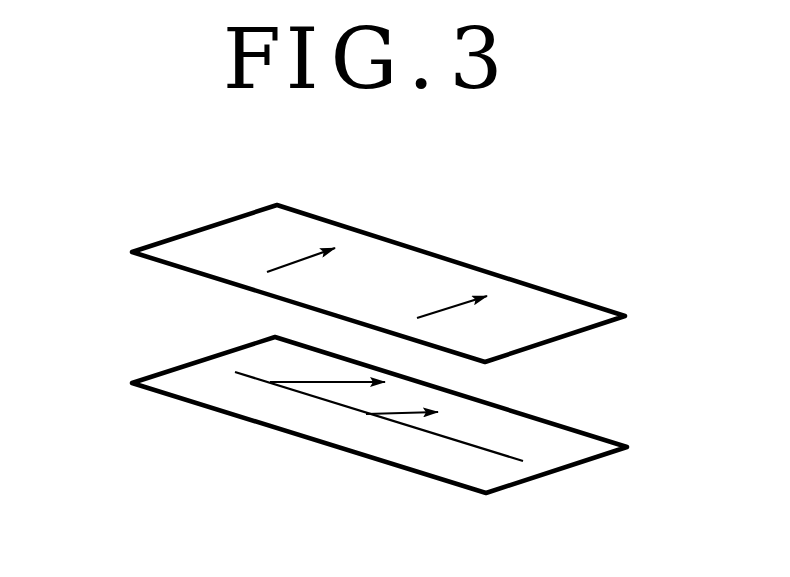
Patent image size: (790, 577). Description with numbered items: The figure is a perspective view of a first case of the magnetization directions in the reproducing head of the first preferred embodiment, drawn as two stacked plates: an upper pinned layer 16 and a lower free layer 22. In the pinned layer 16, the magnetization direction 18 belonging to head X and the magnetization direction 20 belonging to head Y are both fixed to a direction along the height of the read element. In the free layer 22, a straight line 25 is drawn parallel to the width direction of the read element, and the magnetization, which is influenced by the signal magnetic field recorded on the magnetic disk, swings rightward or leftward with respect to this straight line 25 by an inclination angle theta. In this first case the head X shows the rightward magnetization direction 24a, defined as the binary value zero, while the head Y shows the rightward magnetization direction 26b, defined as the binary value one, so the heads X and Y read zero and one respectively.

The pinned layer 16 is at (173, 245).
The magnetization direction 18 is at (293, 263).
The magnetization direction 20 is at (440, 312).
The free layer 22 is at (173, 385).
The rightward magnetization direction 24a is at (303, 380).
The straight line 25 is at (330, 402).
The rightward magnetization direction 26b is at (406, 413).